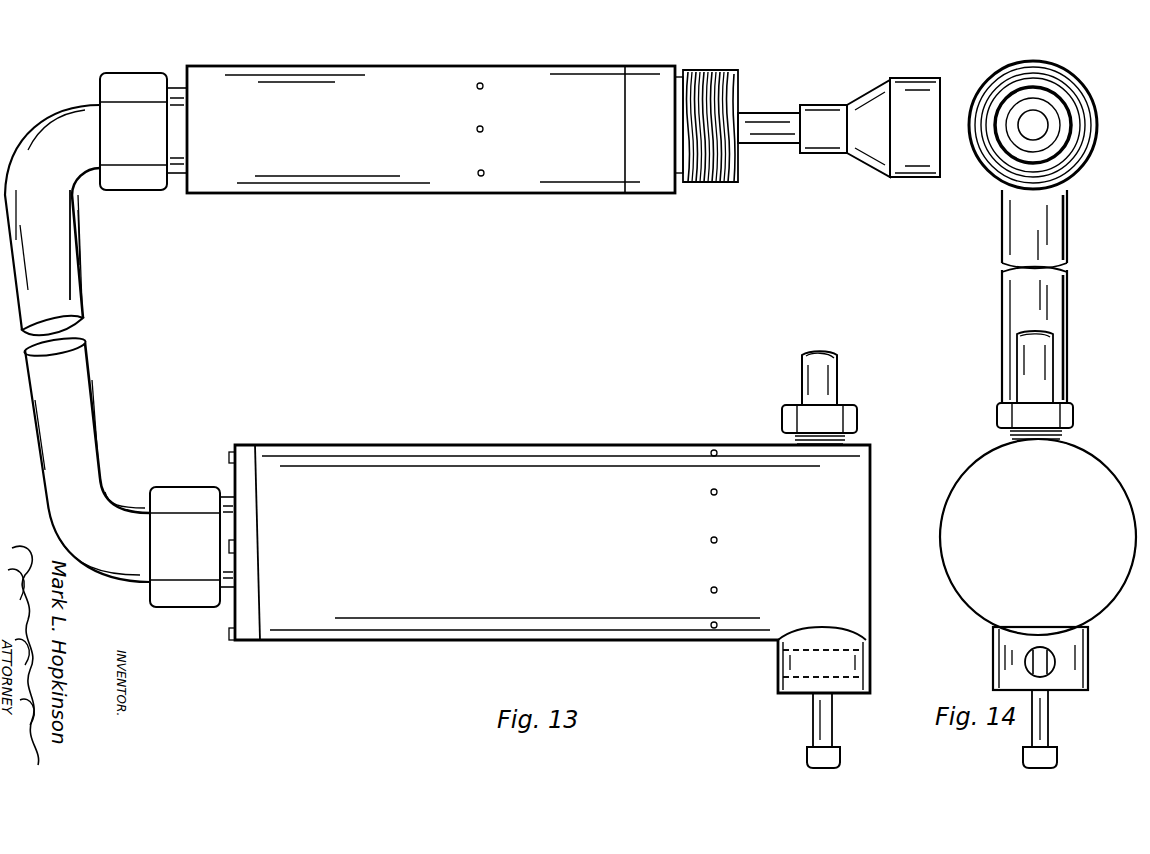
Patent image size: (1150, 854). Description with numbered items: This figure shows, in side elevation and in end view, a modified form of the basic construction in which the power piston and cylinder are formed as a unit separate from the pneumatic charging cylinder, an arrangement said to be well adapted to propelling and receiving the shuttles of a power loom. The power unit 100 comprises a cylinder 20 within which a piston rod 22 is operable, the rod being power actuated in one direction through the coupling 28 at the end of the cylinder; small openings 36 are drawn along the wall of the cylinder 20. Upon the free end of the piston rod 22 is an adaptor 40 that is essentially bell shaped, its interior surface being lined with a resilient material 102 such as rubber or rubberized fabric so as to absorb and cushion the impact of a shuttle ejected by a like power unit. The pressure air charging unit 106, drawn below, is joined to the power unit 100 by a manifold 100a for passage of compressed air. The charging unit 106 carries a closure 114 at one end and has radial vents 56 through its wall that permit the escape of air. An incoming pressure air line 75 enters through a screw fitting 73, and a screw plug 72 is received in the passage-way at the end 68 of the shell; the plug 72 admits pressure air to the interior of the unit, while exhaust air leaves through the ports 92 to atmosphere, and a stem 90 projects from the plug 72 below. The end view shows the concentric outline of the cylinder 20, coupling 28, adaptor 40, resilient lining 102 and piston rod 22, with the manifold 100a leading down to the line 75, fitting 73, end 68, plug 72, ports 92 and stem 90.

In FIG. 13, the cylinder 20 is at (437, 173).
In FIG. 14, the cylinder 20 is at (1058, 68).
In FIG. 13, the piston rod 22 is at (764, 122).
In FIG. 14, the piston rod 22 is at (1035, 126).
In FIG. 13, the coupling 28 is at (647, 78).
In FIG. 14, the coupling 28 is at (1072, 88).
In FIG. 13, the holes 36 is at (484, 127).
In FIG. 13, the adaptor 40 is at (912, 150).
In FIG. 14, the adaptor 40 is at (1075, 103).
In FIG. 13, the radial vents 56 is at (718, 537).
In FIG. 14, the end 68 is at (977, 575).
In FIG. 13, the screw plug 72 is at (873, 684).
In FIG. 14, the screw plug 72 is at (1088, 645).
In FIG. 13, the screw fitting 73 is at (856, 417).
In FIG. 14, the screw fitting 73 is at (1072, 416).
In FIG. 13, the pressure air line 75 is at (838, 372).
In FIG. 14, the pressure air line 75 is at (1048, 352).
In FIG. 13, the bolt 90 is at (835, 722).
In FIG. 14, the bolt 90 is at (1050, 720).
In FIG. 13, the ports 92 is at (795, 677).
In FIG. 14, the ports 92 is at (1055, 662).
In FIG. 13, the power unit 100 is at (563, 120).
In FIG. 13, the manifold 100a is at (62, 288).
In FIG. 14, the manifold 100a is at (1060, 226).
In FIG. 14, the resilient material 102 is at (1072, 120).
In FIG. 13, the pressure air charging unit 106 is at (576, 557).
In FIG. 14, the pressure air charging unit 106 is at (975, 456).
In FIG. 13, the closure 114 is at (250, 447).